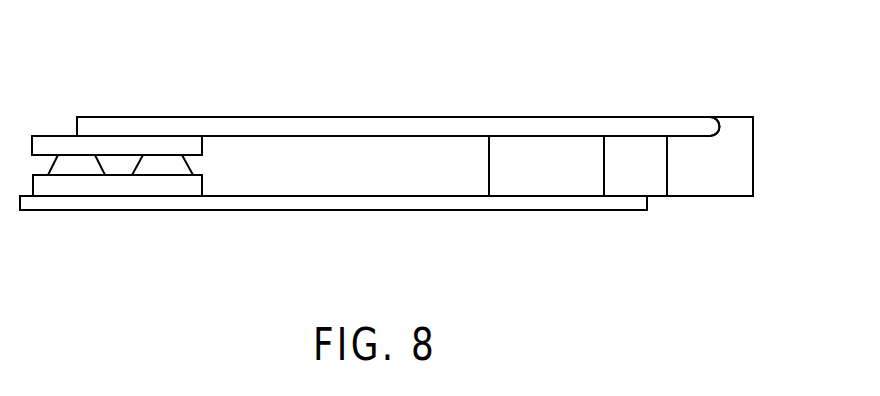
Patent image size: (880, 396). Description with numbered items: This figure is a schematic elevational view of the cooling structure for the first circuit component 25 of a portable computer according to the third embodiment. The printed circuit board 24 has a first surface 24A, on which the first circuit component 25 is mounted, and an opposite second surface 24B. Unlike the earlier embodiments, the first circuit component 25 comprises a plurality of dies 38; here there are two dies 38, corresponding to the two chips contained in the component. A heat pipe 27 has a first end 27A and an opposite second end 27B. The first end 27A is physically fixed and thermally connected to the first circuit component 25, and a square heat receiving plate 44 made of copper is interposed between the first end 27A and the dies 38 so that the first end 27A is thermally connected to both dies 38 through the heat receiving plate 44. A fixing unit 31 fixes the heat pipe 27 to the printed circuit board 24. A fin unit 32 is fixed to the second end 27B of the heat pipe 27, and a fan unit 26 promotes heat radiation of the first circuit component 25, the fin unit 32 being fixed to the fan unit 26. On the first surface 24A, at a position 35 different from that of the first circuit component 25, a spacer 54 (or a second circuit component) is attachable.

The printed circuit board 24 is at (371, 228).
The first surface 24A is at (290, 196).
The second surface 24B is at (285, 211).
The first circuit component 25 is at (108, 185).
The fan unit 26 is at (652, 185).
The heat pipe 27 is at (440, 117).
The first end 27A is at (142, 125).
The second end 27B is at (697, 128).
The fixing unit 31 is at (569, 105).
The fin unit 32 is at (768, 114).
The position 35 is at (518, 97).
The die 38 is at (75, 167).
The heat receiving plate 44 is at (99, 148).
The spacer 54 is at (548, 178).